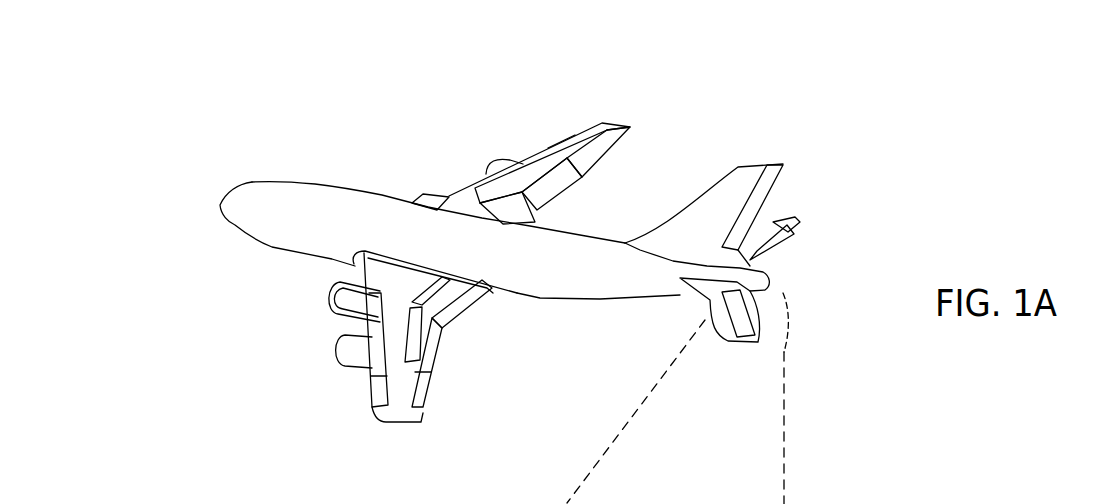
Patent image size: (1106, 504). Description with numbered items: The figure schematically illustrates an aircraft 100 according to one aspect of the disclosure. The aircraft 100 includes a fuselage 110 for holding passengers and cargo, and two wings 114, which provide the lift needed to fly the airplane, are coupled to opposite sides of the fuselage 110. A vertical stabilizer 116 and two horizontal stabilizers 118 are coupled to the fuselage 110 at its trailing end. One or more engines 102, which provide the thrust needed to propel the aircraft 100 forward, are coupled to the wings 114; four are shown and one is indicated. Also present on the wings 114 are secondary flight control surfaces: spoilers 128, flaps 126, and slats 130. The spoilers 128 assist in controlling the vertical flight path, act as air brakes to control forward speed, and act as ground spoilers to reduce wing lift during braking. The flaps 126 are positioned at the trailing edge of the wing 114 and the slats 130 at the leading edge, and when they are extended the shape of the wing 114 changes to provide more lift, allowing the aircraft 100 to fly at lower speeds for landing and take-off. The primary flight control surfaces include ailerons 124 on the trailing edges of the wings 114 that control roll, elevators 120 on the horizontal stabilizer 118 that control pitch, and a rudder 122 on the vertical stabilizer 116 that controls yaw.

The aircraft 100 is at (937, 104).
The engine 102 is at (333, 352).
The fuselage 110 is at (268, 223).
The wing 114 is at (523, 165).
The vertical stabilizer 116 is at (723, 200).
The horizontal stabilizer 118 is at (798, 222).
The elevator 120 is at (764, 309).
The rudder 122 is at (792, 153).
The aileron 124 is at (601, 168).
The flap 126 is at (553, 221).
The spoiler 128 is at (496, 180).
The slat 130 is at (557, 125).